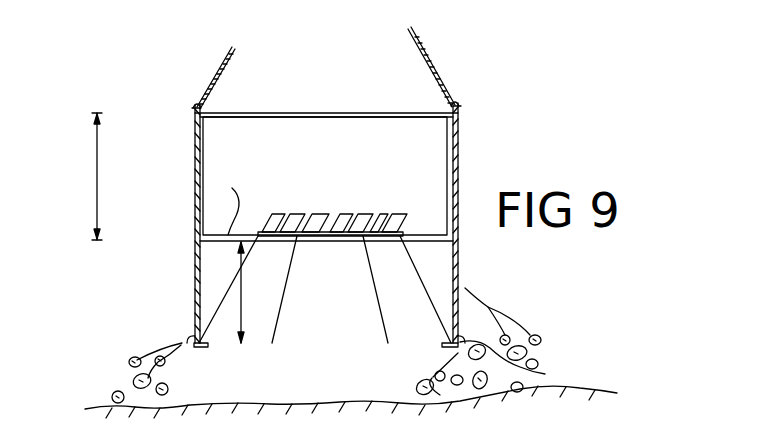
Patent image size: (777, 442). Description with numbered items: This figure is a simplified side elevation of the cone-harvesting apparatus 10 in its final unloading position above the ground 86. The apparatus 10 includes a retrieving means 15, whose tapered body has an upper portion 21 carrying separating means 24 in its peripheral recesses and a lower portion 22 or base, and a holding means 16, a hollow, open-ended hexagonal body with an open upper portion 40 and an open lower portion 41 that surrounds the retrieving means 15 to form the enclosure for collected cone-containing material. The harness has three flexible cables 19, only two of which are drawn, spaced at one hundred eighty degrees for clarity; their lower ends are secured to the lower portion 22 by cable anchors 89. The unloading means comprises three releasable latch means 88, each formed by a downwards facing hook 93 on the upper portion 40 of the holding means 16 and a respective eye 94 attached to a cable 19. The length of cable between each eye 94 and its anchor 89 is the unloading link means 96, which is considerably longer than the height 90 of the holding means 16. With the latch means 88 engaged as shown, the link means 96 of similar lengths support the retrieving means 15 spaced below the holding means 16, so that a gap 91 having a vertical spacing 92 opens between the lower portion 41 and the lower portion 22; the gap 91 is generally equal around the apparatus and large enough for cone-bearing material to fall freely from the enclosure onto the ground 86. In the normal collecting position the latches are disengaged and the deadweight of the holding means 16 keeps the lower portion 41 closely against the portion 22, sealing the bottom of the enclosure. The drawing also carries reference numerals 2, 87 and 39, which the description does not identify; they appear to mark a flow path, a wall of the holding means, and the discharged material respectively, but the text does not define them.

The apparatus 10 is at (327, 94).
The flexible cables 19 is at (231, 60).
The releasable latch means 88 is at (196, 103).
The downwards facing hook 93 is at (333, 94).
The eye 94 is at (194, 109).
The upper portion 40 is at (326, 98).
The height 90 is at (95, 143).
The holding means 16 is at (319, 211).
The air flow path 2 is at (228, 207).
The upper portion 21 is at (332, 199).
The separating means 24 is at (266, 218).
The lower portion 41 is at (446, 235).
The gap 91 is at (217, 252).
The unloading link means 96 is at (195, 281).
The post wall 87 is at (319, 223).
The vertical spacing 92 is at (240, 270).
The cable anchors 89 is at (192, 338).
The dispensed material 39 is at (162, 362).
The lower portion 22 is at (257, 345).
The retrieving means 15 is at (315, 306).
The ground 86 is at (347, 402).